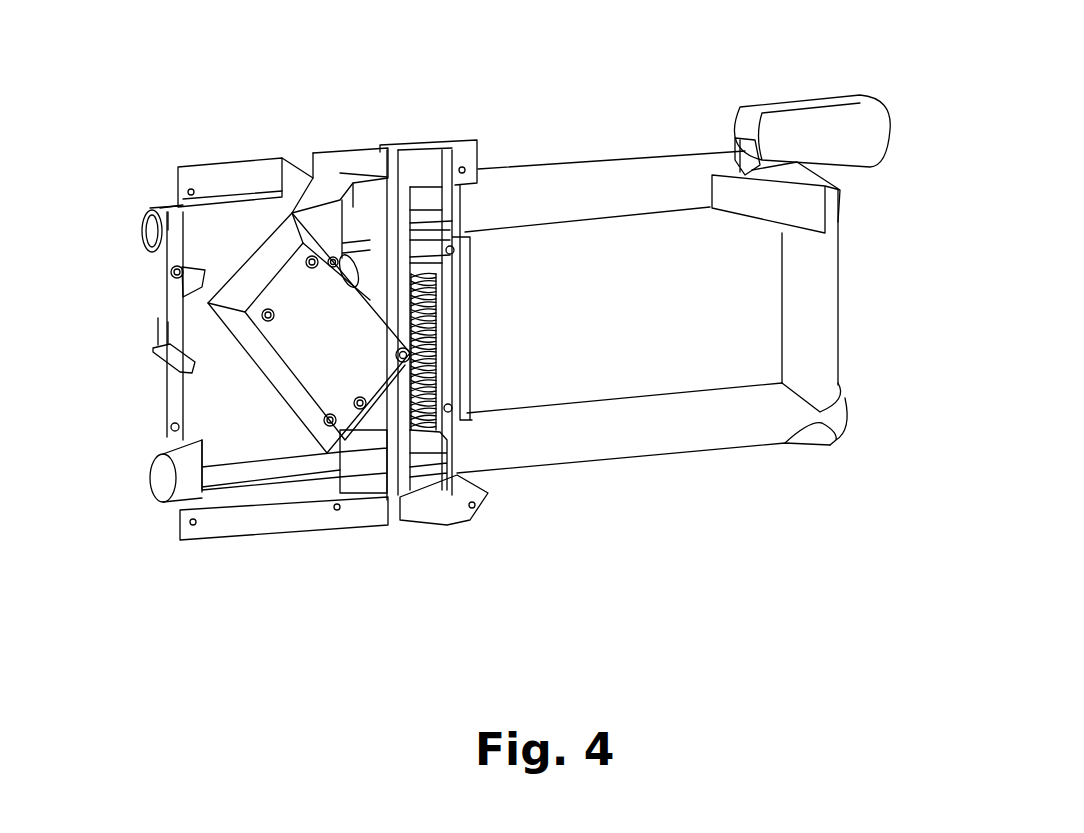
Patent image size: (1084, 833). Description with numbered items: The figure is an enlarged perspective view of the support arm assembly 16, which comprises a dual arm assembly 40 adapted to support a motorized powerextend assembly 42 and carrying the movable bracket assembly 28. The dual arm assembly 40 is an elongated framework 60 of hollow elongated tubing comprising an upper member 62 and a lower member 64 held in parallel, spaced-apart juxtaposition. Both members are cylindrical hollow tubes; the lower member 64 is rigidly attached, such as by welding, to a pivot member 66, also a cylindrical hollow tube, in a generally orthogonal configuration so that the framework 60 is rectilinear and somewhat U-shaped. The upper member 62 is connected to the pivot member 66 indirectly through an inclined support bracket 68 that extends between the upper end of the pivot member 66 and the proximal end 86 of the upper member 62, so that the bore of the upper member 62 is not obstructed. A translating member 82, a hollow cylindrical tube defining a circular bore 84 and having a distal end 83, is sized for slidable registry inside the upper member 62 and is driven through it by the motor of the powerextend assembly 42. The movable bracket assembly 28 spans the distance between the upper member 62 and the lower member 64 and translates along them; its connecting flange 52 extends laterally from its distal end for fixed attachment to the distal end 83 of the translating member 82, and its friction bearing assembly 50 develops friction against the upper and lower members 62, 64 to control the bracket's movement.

The support arm assembly 16 is at (503, 108).
The movable bracket assembly 28 is at (425, 146).
The dual arm assembly 40 is at (847, 282).
The motorized powerextend assembly 42 is at (785, 100).
The friction bearing assembly 50 is at (437, 353).
The connecting flange 52 is at (160, 255).
The framework 60 is at (717, 452).
The upper member 62 is at (586, 180).
The lower member 64 is at (635, 437).
The pivot member 66 is at (828, 330).
The inclined support bracket 68 is at (807, 208).
The translating member 82 is at (165, 209).
The distal end 83 is at (143, 239).
The bore 84 is at (142, 227).
The proximal end 86 is at (700, 130).